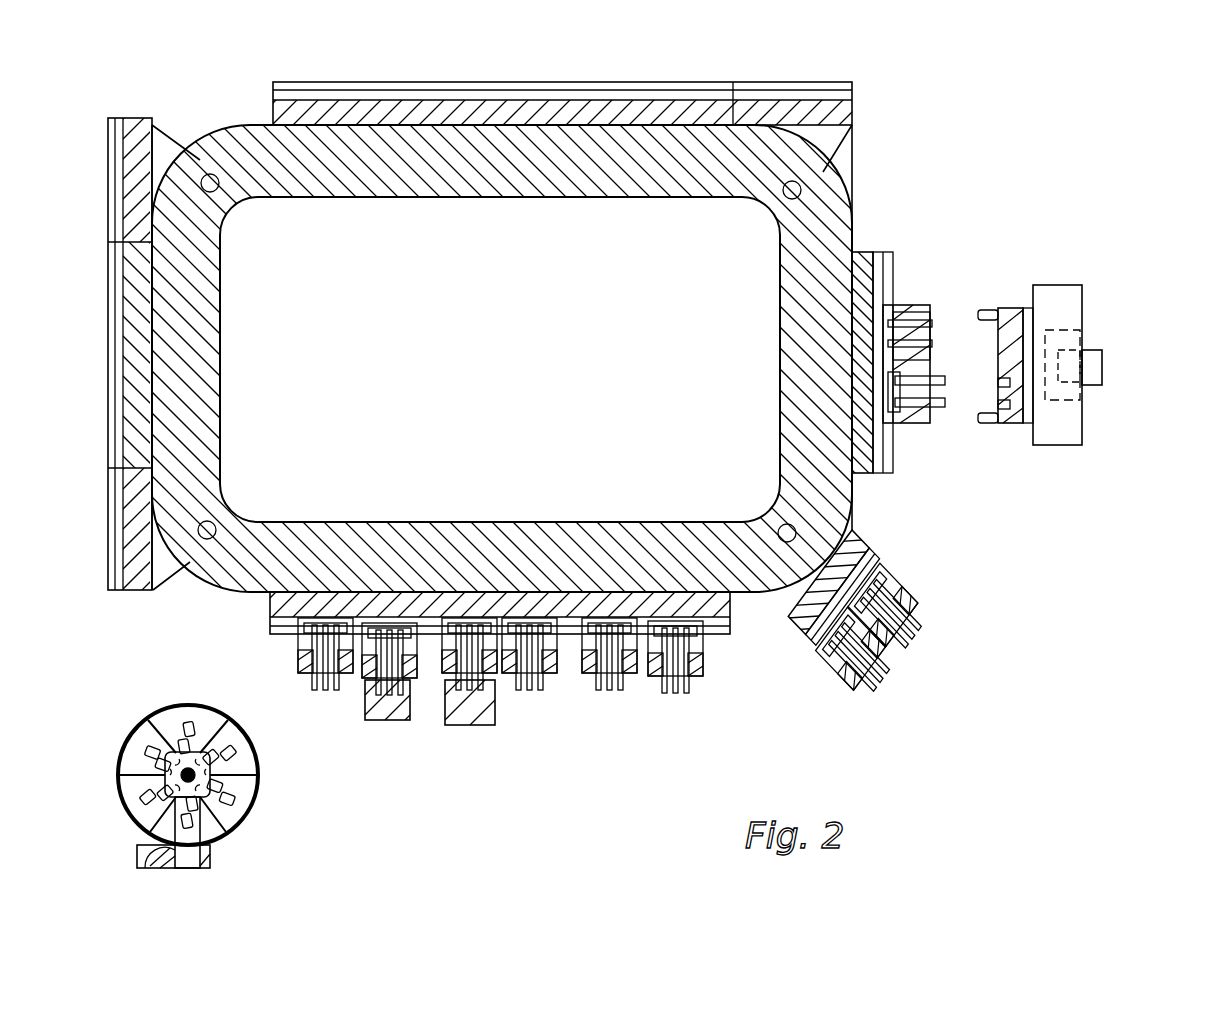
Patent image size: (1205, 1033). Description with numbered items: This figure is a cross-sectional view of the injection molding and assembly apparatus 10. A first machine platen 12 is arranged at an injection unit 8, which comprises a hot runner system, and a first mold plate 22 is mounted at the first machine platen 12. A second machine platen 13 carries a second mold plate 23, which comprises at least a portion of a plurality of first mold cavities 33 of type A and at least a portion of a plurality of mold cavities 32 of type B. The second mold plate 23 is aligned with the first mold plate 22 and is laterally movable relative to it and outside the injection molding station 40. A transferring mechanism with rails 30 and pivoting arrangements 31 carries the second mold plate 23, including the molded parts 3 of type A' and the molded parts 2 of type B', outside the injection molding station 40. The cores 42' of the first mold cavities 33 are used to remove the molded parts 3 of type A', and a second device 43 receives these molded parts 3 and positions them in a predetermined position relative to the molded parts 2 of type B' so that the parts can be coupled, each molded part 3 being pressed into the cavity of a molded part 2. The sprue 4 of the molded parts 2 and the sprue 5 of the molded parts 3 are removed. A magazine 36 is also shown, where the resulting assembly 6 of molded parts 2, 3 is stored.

The injection molding and assembly apparatus 10 is at (958, 584).
The rails 30 is at (275, 112).
The pivoting arrangements 31 is at (127, 155).
The second machine platen 13 is at (861, 255).
The mold cavities of type B 32 is at (906, 290).
The second mold plate 23 is at (930, 306).
The first mold cavities of type A 33 is at (915, 426).
The first mold plate 22 is at (1007, 307).
The injection molding station 40 is at (960, 359).
The first machine platen 12 is at (1055, 445).
The injection unit 8 is at (1095, 385).
The cores of the first mold cavities 42' is at (317, 682).
The second device 43 is at (388, 718).
The molded parts of type A' 3 is at (596, 690).
The molded parts of type B' 2 is at (680, 675).
The sprue of the molded parts of type A' 5 is at (598, 705).
The sprue of the molded parts of type B' 4 is at (654, 703).
The magazine 36 is at (295, 798).
The assembly of molded parts 6 is at (172, 735).